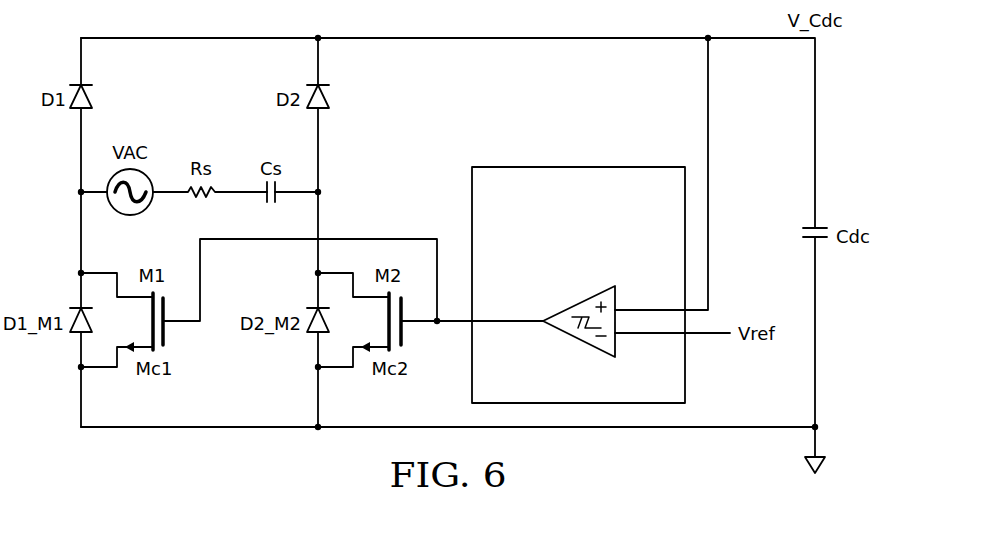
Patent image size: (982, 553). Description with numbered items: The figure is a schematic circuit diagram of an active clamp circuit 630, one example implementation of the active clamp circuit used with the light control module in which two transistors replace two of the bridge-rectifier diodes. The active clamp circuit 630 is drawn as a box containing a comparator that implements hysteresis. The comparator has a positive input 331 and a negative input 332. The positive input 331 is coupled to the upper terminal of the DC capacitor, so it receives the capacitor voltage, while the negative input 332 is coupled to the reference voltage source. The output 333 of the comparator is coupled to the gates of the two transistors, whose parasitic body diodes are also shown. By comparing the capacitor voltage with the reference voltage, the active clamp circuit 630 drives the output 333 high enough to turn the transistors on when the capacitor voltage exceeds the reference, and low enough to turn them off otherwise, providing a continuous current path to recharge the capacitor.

The active clamp circuit 630 is at (592, 156).
The positive input 331 is at (623, 302).
The negative input 332 is at (623, 338).
The output 333 is at (535, 330).